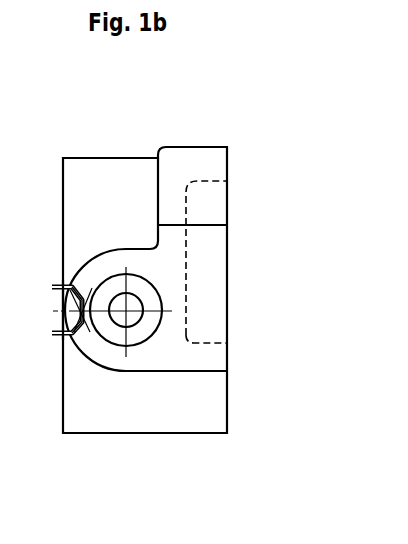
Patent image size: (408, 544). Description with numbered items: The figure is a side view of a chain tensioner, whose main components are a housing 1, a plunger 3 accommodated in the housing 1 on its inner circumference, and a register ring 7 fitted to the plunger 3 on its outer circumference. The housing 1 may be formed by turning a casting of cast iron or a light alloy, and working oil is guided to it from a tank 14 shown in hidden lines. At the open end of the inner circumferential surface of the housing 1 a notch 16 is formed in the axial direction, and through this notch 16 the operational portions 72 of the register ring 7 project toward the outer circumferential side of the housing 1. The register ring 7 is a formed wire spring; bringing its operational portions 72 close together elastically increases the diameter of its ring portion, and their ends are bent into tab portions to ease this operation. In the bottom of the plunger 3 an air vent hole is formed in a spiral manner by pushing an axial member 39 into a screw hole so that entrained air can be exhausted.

The housing 1 is at (62, 400).
The plunger 3 is at (157, 335).
The axial member 39 is at (130, 320).
The tank 14 is at (200, 343).
The register ring 7 is at (52, 337).
The operational portions 72 is at (58, 303).
The notch 16 is at (85, 305).